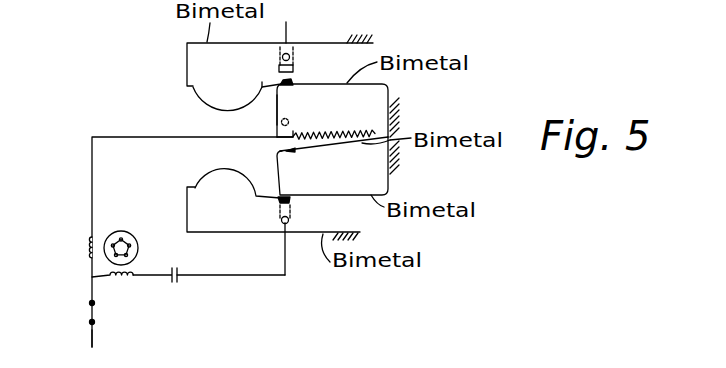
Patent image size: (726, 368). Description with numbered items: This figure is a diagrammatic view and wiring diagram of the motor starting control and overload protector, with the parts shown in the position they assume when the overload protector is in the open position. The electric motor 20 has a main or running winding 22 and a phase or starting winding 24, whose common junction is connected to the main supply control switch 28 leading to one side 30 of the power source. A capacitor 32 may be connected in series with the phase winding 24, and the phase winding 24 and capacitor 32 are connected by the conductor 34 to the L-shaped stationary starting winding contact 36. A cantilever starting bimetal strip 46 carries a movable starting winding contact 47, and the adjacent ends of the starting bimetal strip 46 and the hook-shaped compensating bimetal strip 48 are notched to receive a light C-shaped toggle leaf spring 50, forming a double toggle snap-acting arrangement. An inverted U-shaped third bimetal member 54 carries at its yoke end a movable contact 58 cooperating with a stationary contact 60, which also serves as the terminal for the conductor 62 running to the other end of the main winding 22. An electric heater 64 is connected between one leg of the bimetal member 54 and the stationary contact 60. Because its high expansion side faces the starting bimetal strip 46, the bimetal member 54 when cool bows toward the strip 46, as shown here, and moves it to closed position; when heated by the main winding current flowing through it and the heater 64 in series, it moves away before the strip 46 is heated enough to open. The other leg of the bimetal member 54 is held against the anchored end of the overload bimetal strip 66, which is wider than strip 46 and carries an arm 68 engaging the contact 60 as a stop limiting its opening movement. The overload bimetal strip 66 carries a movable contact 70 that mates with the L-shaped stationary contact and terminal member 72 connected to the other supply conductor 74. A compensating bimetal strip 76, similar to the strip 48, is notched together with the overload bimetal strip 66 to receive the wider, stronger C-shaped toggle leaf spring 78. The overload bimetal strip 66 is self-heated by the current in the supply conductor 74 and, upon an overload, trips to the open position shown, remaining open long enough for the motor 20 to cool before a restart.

The electric motor 20 is at (160, 222).
The main winding 22 is at (88, 250).
The phase winding 24 is at (120, 280).
The main supply control switch 28 is at (90, 319).
The one side of the power source 30 is at (92, 338).
The capacitor 32 is at (177, 281).
The conductor 34 is at (235, 276).
The stationary starting winding contact 36 is at (292, 207).
The starting bimetal strip 46 is at (340, 195).
The movable starting winding contact 47 is at (279, 197).
The compensating bimetal strip 48 is at (231, 233).
The toggle leaf spring 50 is at (213, 172).
The third bimetal member 54 is at (346, 140).
The movable contact 58 is at (288, 150).
The stationary contact 60 is at (290, 133).
The conductor 62 is at (129, 110).
The electric heater 64 is at (355, 136).
The overload bimetal strip 66 is at (315, 83).
The arm 68 is at (275, 102).
The movable contact 70 is at (288, 82).
The stationary contact and terminal member 72 is at (292, 71).
The supply conductor 74 is at (288, 24).
The compensating bimetal strip 76 is at (187, 55).
The toggle leaf spring 78 is at (203, 102).